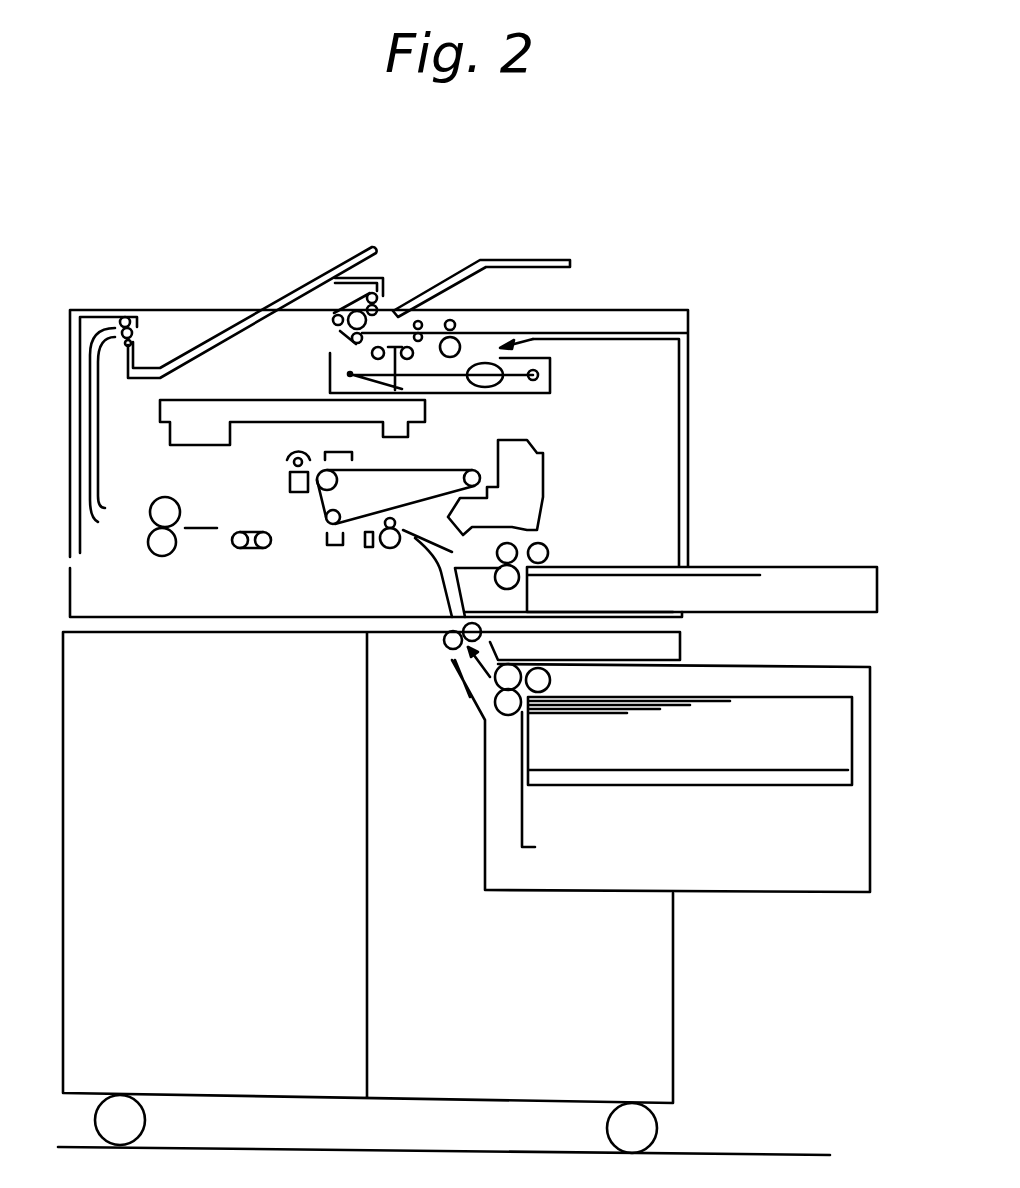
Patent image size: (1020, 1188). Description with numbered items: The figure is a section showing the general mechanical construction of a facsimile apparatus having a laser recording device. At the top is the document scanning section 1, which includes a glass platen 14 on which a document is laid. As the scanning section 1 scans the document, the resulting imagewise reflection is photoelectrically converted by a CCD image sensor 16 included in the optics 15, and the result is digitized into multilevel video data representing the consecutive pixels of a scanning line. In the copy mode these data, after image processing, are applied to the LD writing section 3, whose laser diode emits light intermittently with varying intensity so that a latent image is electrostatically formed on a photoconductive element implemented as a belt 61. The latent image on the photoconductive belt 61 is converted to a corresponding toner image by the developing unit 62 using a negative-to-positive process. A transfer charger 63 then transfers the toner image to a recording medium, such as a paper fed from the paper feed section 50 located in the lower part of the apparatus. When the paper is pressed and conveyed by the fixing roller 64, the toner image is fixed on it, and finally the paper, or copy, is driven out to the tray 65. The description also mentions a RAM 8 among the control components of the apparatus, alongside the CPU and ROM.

The document scanning section 1 is at (530, 341).
The LD writing section 3 is at (160, 412).
The RAM 8 is at (111, 431).
The glass platen 14 is at (477, 332).
The optics 15 is at (350, 375).
The CCD image sensor 16 is at (540, 375).
The paper feed section 50 is at (820, 656).
The photoconductive belt 61 is at (412, 462).
The developing unit 62 is at (548, 472).
The transfer charger 63 is at (334, 547).
The fixing roller 64 is at (168, 556).
The tray 65 is at (225, 330).